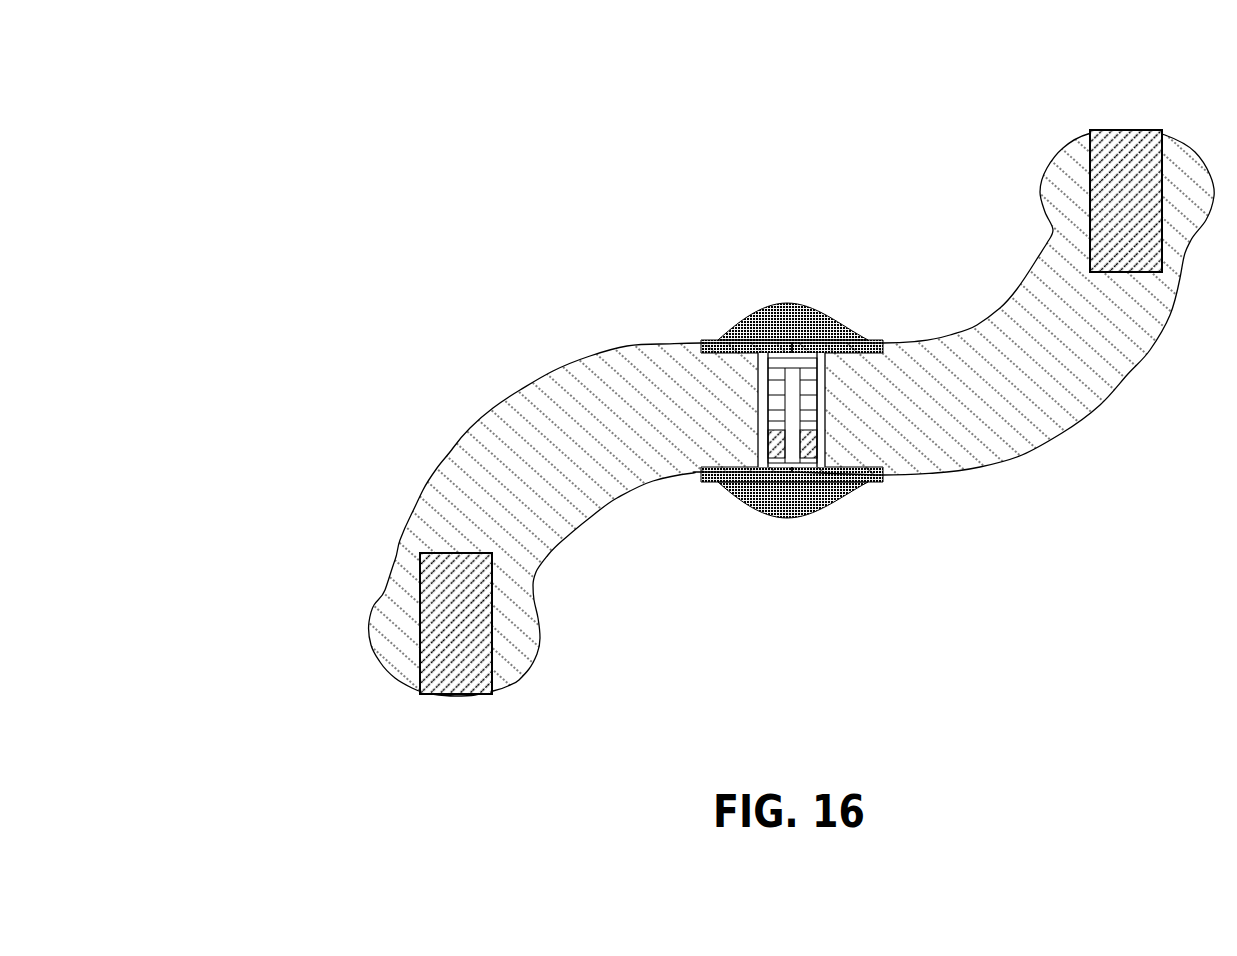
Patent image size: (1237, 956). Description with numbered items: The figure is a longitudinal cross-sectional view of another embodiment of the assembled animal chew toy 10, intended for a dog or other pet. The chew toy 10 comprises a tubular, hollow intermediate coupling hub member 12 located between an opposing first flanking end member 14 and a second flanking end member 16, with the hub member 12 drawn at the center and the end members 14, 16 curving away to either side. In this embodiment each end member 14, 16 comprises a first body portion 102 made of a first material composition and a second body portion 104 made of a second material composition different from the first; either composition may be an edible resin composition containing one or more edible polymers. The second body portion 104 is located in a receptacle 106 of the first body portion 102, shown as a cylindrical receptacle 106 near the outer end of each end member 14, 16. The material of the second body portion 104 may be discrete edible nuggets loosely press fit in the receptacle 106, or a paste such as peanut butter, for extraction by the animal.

The animal chew toy 10 is at (292, 92).
The intermediate coupling hub member 12 is at (738, 328).
The first flanking end member 14 is at (538, 315).
The second flanking end member 16 is at (1060, 492).
The first body portion 102 is at (975, 367).
The second body portion 104 is at (1125, 160).
The receptacle 106 is at (1090, 178).